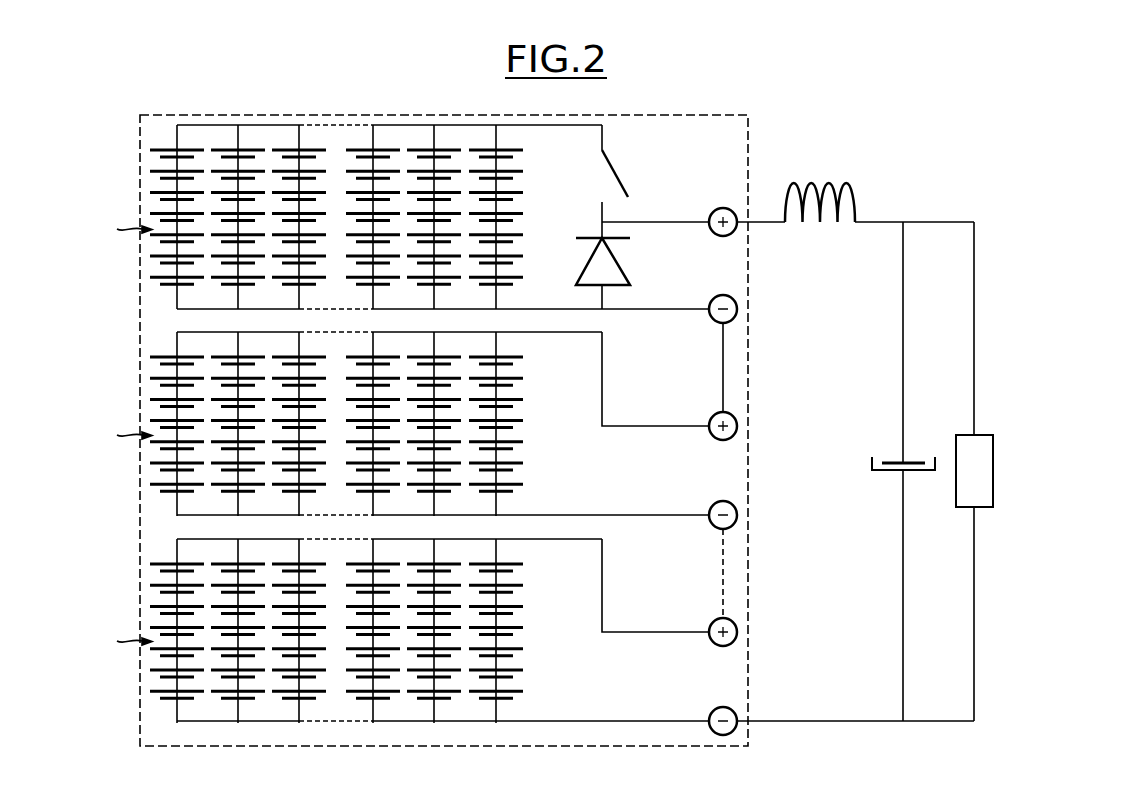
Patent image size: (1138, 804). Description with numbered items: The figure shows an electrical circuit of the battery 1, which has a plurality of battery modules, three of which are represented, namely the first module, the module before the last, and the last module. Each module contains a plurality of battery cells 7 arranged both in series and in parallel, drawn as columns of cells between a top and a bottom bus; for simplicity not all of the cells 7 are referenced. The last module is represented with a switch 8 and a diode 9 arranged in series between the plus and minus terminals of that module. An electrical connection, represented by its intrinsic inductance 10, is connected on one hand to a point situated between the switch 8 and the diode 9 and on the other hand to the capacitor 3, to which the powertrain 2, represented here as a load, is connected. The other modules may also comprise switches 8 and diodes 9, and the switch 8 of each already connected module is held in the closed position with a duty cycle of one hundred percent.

The battery 1 is at (444, 114).
The powertrain 2 is at (993, 470).
The capacitor 3 is at (860, 461).
The battery cells 7 is at (509, 758).
The switch 8 is at (618, 168).
The diode 9 is at (620, 258).
The intrinsic inductance 10 is at (811, 183).